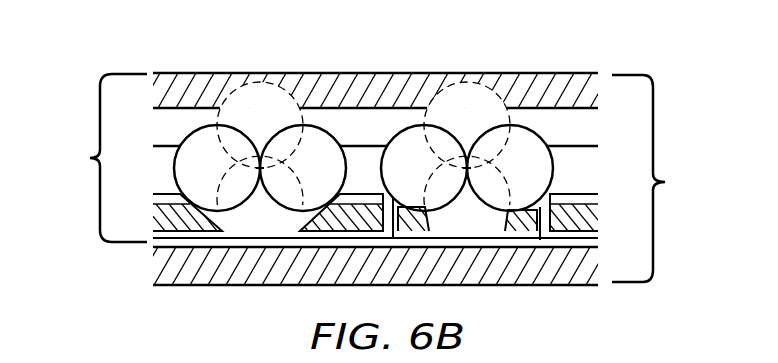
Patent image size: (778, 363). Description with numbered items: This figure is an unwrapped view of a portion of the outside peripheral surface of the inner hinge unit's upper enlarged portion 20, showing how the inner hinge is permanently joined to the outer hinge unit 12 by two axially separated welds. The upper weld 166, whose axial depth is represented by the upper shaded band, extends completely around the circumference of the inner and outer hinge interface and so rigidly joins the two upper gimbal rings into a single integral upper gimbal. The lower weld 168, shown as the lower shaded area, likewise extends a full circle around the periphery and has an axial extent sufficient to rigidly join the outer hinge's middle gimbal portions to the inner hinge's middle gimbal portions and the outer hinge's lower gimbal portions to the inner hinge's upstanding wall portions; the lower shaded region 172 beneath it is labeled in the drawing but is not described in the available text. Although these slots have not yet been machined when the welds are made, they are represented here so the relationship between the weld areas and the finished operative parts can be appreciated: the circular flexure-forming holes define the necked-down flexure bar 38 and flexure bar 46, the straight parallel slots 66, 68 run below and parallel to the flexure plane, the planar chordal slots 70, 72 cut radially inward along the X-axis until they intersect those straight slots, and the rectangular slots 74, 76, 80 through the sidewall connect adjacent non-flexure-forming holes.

The outer hinge unit 12 is at (88, 158).
The upper enlarged portion 20 is at (654, 178).
The flexure bar 38 is at (462, 166).
The flexure bar 46 is at (257, 169).
The straight parallel slot 66 is at (395, 201).
The straight parallel slot 68 is at (548, 207).
The planar chordal slot 70 is at (300, 233).
The planar chordal slot 72 is at (598, 239).
The rectangular slot 74 is at (350, 173).
The rectangular slot 76 is at (578, 173).
The rectangular slot 80 is at (162, 182).
The upper weld 166 is at (478, 78).
The lower weld 168 is at (162, 219).
The lower substrate 172 is at (292, 278).